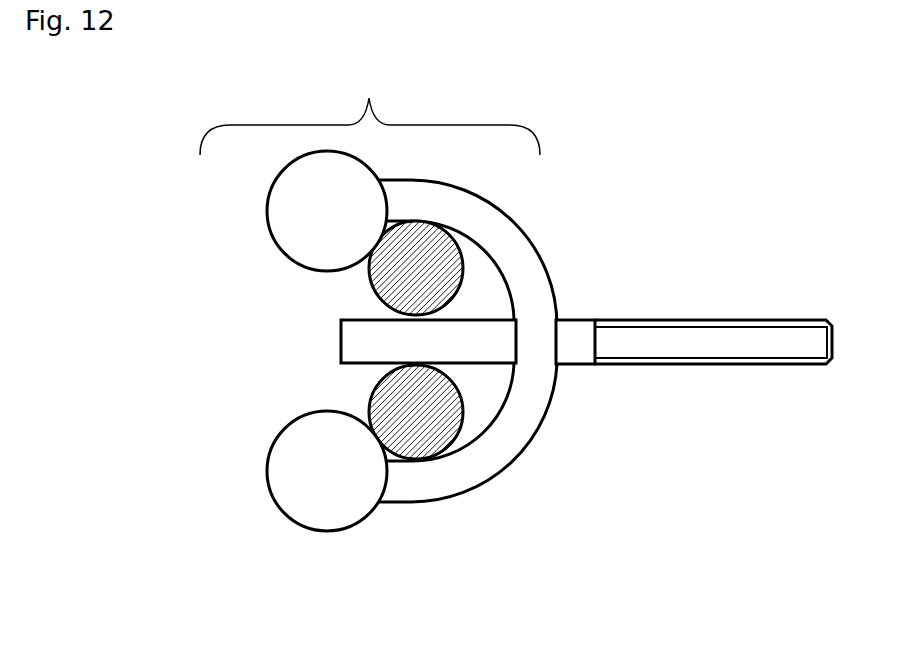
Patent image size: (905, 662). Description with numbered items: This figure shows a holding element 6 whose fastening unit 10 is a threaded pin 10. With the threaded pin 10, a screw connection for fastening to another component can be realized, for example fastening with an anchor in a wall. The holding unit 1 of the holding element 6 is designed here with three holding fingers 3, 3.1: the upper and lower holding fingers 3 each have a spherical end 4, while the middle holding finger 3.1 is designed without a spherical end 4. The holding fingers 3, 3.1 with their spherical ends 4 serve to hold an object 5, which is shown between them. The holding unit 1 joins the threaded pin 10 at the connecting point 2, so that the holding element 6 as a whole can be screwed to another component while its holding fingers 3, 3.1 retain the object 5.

The holding unit 1 is at (370, 113).
The connecting point 2 is at (552, 347).
The holding finger 3 is at (533, 285).
The holding finger without spherical end 3.1 is at (458, 338).
The spherical end 4 is at (323, 218).
The object 5 is at (400, 392).
The holding element 6 is at (648, 202).
The fastening unit 10 is at (683, 347).